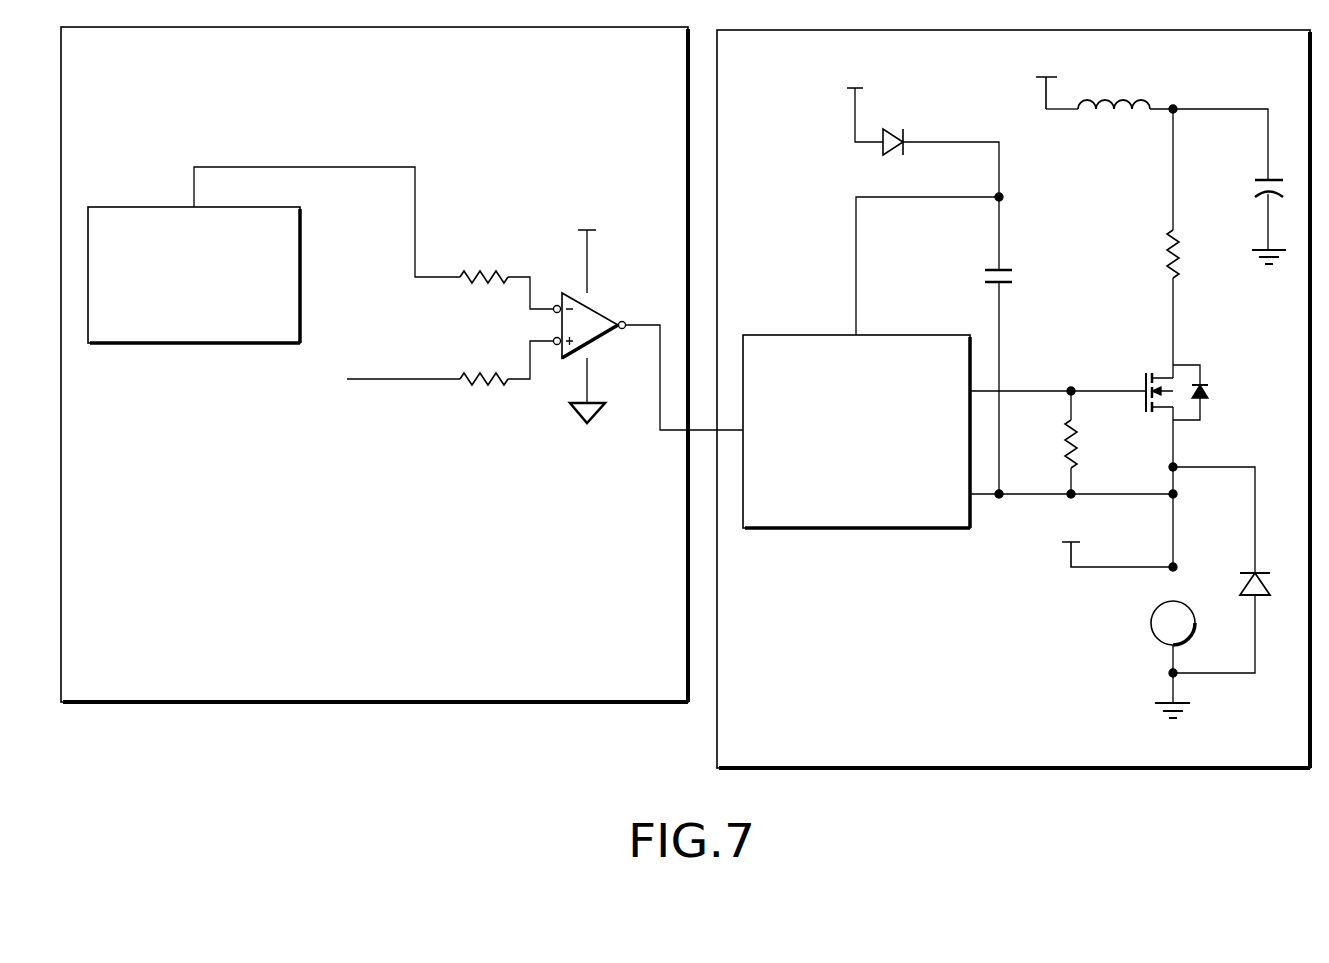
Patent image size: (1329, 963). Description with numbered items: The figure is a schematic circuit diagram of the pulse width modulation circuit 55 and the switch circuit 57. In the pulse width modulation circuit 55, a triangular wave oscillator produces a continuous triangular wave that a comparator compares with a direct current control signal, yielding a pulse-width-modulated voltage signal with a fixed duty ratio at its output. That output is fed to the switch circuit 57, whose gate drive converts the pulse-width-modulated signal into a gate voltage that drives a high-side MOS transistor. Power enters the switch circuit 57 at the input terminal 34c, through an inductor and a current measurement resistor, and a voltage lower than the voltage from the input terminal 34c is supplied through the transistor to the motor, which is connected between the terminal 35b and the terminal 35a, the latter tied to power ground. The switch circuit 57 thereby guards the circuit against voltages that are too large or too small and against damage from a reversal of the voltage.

The pulse width modulation circuit 55 is at (594, 554).
The switch circuit 57 is at (996, 702).
The input terminal 34c is at (1046, 78).
The motor ground terminal 35a is at (1150, 674).
The motor terminal 35b is at (1116, 543).